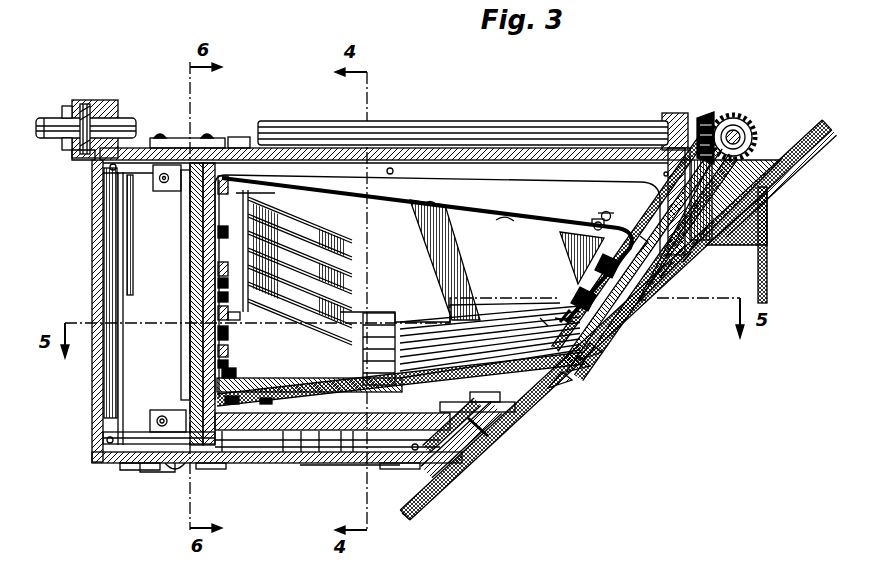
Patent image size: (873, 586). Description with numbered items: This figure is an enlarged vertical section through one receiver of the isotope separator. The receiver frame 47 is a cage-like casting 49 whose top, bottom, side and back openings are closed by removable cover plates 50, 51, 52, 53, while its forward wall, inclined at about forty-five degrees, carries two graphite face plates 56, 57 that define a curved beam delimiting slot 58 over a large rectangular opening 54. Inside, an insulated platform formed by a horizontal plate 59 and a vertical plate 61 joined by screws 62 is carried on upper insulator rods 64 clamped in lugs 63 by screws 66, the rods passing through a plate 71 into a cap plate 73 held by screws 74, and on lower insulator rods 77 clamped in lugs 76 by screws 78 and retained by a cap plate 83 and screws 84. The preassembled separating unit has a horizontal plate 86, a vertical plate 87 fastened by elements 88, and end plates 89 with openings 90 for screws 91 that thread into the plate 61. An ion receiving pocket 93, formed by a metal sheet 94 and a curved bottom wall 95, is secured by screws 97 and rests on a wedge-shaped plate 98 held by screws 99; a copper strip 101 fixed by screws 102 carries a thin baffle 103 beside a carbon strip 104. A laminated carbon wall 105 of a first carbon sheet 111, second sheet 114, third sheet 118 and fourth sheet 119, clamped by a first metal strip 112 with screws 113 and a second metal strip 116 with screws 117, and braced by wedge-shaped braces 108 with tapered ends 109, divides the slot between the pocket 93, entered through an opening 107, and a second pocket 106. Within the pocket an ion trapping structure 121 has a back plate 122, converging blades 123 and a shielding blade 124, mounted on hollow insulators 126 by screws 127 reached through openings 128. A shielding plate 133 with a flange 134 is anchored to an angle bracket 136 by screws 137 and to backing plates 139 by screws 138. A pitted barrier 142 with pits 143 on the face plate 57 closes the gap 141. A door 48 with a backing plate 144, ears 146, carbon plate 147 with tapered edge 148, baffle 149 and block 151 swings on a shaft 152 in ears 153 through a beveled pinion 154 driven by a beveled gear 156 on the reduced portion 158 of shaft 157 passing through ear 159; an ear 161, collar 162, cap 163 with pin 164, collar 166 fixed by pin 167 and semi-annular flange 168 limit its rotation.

The receiver frame 47 is at (88, 232).
The door 48 is at (648, 322).
The cage-like casting 49 is at (98, 290).
The top cover plate 50 is at (500, 148).
The bottom cover plate 51 is at (381, 466).
The side cover plate 52 is at (556, 180).
The back cover plate 53 is at (92, 262).
The rectangular opening 54 is at (642, 238).
The graphite face plate 56 is at (612, 340).
The graphite face plate 57 is at (428, 506).
The beam delimiting slot 58 is at (606, 352).
The horizontally disposed plate 59 is at (456, 470).
The vertically disposed plate 61 is at (195, 240).
The screws 62 is at (112, 458).
The upwardly projecting lug 63 is at (203, 190).
The insulator rod 64 is at (216, 205).
The screw 66 is at (153, 172).
The plate 71 is at (240, 138).
The cap plate 73 is at (175, 140).
The screws 74 is at (160, 135).
The downwardly projecting lug 76 is at (150, 420).
The insulator rod 77 is at (128, 468).
The screws 78 is at (140, 436).
The cap plate 83 is at (170, 470).
The screws 84 is at (150, 468).
The horizontally disposed plate 86 is at (263, 431).
The vertically disposed plate 87 is at (218, 268).
The fastening elements 88 is at (218, 388).
The end plates 89 is at (514, 226).
The opening 90 is at (294, 214).
The screws 91 is at (205, 232).
The ion receiving pocket 93 is at (491, 250).
The metal sheet 94 is at (462, 212).
The bottom wall 95 is at (368, 340).
The screws 97 is at (286, 146).
The wedge-shaped plate 98 is at (218, 363).
The screws 99 is at (218, 376).
The metal strip 101 is at (218, 400).
The screws 102 is at (205, 470).
The thin metal strip 103 is at (246, 465).
The carbon strip 104 is at (222, 431).
The laminated carbon wall 105 is at (483, 314).
The second ion receiving pocket 106 is at (442, 412).
The opening 107 is at (547, 320).
The wedge-shaped braces 108 is at (353, 465).
The tapered forward ends 109 is at (396, 455).
The first carbon sheet 111 is at (592, 370).
The first metal strip 112 is at (301, 431).
The screws 113 is at (283, 465).
The second carbon sheet 114 is at (580, 378).
The second metal strip 116 is at (319, 465).
The screws 117 is at (341, 431).
The third carbon sheet 118 is at (556, 386).
The fourth carbon sheet 119 is at (482, 410).
The ion trapping structure 121 is at (352, 258).
The back plate 122 is at (218, 283).
The blades 123 is at (352, 240).
The shielding blade 124 is at (395, 340).
The hollow insulators 126 is at (218, 256).
The screws 127 is at (218, 316).
The openings 128 is at (218, 334).
The shielding plate 133 is at (672, 276).
The flange 134 is at (605, 212).
The angle bracket 136 is at (578, 236).
The screws 137 is at (596, 223).
The screws 138 is at (568, 324).
The backing plates 139 is at (580, 290).
The gap 141 is at (490, 438).
The barrier 142 is at (503, 426).
The pits 143 is at (512, 414).
The backing plate 144 is at (700, 250).
The ears 146 is at (768, 156).
The carbon plate 147 is at (695, 262).
The thickened tapered edge portion 148 is at (598, 362).
The baffle 149 is at (768, 252).
The block 151 is at (768, 215).
The shaft 152 is at (735, 124).
The ears 153 is at (706, 238).
The beveled pinion 154 is at (764, 170).
The beveled gear 156 is at (705, 116).
The shaft 157 is at (404, 130).
The reduced diameter portion 158 is at (660, 140).
The ear 159 is at (676, 113).
The ear 161 is at (114, 100).
The collar 162 is at (90, 108).
The apertured cap 163 is at (84, 100).
The pin 164 is at (74, 158).
The collar 166 is at (42, 118).
The pin 167 is at (60, 140).
The semi-annular flange 168 is at (66, 106).